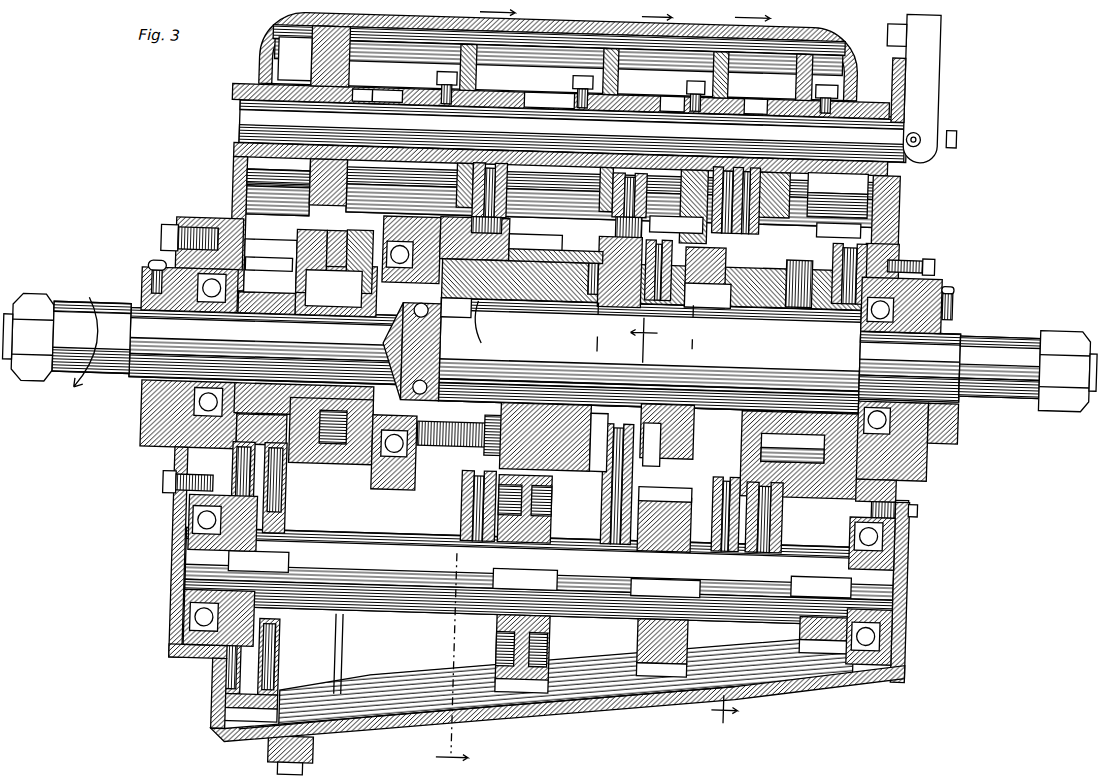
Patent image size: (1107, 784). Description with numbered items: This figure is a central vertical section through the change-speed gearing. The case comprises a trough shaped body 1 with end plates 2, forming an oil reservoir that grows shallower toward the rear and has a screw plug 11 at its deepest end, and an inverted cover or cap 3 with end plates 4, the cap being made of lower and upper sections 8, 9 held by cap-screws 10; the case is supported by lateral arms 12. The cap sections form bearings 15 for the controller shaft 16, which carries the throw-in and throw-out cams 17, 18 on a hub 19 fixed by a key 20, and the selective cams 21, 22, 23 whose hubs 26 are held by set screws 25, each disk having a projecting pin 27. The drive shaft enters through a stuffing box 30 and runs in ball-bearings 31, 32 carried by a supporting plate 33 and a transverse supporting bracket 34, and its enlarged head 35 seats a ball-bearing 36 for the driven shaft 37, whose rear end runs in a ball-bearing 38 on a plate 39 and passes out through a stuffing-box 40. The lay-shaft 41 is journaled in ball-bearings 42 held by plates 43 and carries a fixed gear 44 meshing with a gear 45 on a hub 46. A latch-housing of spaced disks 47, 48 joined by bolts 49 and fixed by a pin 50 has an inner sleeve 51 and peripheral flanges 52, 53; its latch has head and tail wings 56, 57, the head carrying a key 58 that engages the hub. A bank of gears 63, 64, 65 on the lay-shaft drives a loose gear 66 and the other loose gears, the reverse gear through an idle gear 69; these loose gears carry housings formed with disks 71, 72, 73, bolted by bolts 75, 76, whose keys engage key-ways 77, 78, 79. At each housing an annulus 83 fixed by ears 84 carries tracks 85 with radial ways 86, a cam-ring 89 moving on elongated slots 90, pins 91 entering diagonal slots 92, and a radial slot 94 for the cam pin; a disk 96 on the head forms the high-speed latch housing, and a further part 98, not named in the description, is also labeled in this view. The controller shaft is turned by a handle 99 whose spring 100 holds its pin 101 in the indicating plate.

The trough shaped body 1 is at (524, 725).
The end plates 2 is at (622, 680).
The cover or cap 3 is at (230, 196).
The end plates 4 is at (240, 186).
The lower section 8 is at (741, 371).
The upper section 9 is at (767, 713).
The cap-screws 10 is at (651, 184).
The screw plug 11 is at (357, 164).
The lateral arms 12 is at (475, 389).
The bearings 15 is at (228, 160).
The controller shaft 16 is at (387, 89).
The throw-in cam 17 is at (309, 137).
The throw-out cam 18 is at (318, 56).
The hub 19 is at (293, 59).
The key 20 is at (364, 88).
The selective cam 21 is at (452, 65).
The selective cam 22 is at (625, 71).
The selective cam 23 is at (763, 76).
The set screws 25 is at (623, 78).
The hubs 26 is at (646, 89).
The projecting pin 27 is at (561, 85).
The stuffing box 30 is at (67, 336).
The ball-bearing 31 is at (212, 238).
The ball-bearing 32 is at (398, 366).
The supporting plate 33 is at (183, 274).
The transverse supporting bracket 34 is at (372, 512).
The enlarged head 35 is at (410, 350).
The ball-bearing 36 is at (442, 349).
The driven shaft 37 is at (1002, 324).
The ball-bearing 38 is at (815, 287).
The plate 39 is at (940, 268).
The stuffing-box 40 is at (960, 322).
The lay-shaft 41 is at (344, 651).
The ball-bearings 42 is at (542, 505).
The plates 43 is at (537, 597).
The fixed gear 44 is at (266, 581).
The gear 45 is at (269, 265).
The hub 46 is at (268, 284).
The disk 47 is at (331, 445).
The disk 48 is at (286, 309).
The bolts 49 is at (303, 438).
The pin 50 is at (423, 351).
The inner sleeve 51 is at (458, 409).
The peripheral flange 52 is at (319, 348).
The peripheral flange 53 is at (339, 258).
The head wing 56 is at (707, 295).
The tail wing 57 is at (649, 355).
The key 58 is at (410, 329).
The gear 63 is at (534, 630).
The gear 64 is at (671, 582).
The gear 65 is at (808, 632).
The gear 66 is at (523, 334).
The idle gear 69 is at (900, 485).
The disk 71 is at (514, 237).
The disk 72 is at (736, 218).
The disk 73 is at (784, 283).
The bolts 75 is at (675, 436).
The bolts 76 is at (799, 455).
The key-way 77 is at (596, 327).
The key-way 78 is at (692, 327).
The key-way 79 is at (648, 389).
The annulus 83 is at (470, 618).
The ears 84 is at (615, 193).
The tracks 85 is at (647, 370).
The radial ways 86 is at (836, 216).
The cam-ring 89 is at (581, 369).
The elongated slots 90 is at (747, 515).
The pins 91 is at (646, 238).
The diagonal slots 92 is at (681, 215).
The radial slot 94 is at (572, 148).
The disk 96 is at (557, 233).
The flange 98 is at (487, 322).
The handle 99 is at (928, 89).
The spring 100 is at (932, 105).
The pin 101 is at (876, 35).